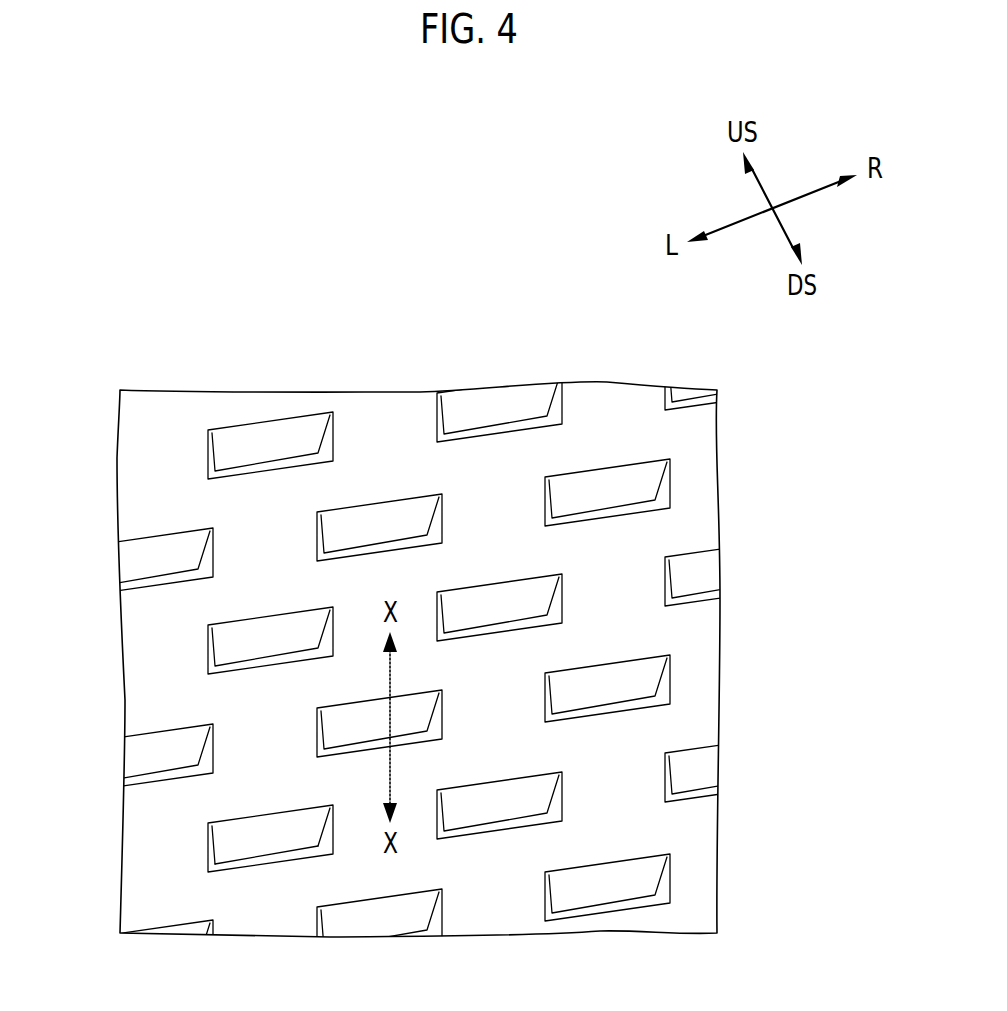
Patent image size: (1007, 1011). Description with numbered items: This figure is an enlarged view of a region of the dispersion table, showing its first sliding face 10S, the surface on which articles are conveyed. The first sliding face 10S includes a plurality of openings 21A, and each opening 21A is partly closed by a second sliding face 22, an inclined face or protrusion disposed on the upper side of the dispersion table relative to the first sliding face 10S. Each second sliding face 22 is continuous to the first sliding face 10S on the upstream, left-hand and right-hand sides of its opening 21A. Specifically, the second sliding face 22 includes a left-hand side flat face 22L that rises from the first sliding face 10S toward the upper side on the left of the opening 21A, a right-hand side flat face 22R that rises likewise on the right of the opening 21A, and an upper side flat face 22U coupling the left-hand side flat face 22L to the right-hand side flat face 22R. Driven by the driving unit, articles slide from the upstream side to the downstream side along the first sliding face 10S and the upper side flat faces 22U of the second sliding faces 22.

The first sliding face 10S is at (160, 657).
The second sliding face 22 is at (218, 614).
The opening 21A is at (252, 677).
The left-hand side flat face 22L is at (210, 850).
The upper side flat face 22U is at (267, 845).
The right-hand side flat face 22R is at (332, 840).